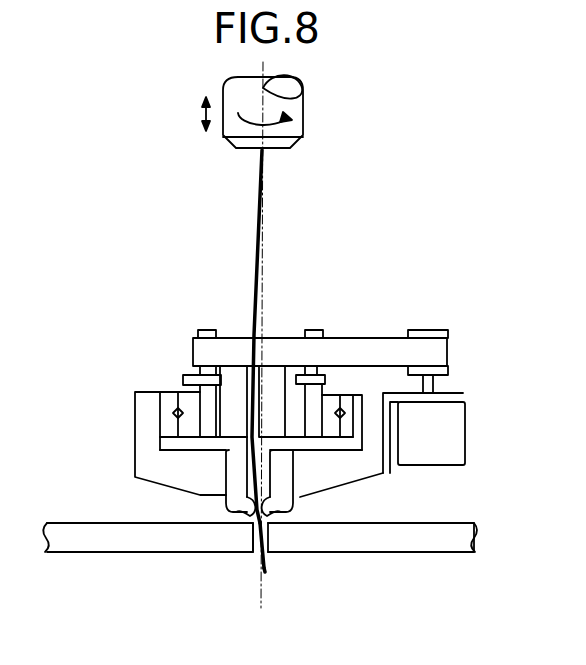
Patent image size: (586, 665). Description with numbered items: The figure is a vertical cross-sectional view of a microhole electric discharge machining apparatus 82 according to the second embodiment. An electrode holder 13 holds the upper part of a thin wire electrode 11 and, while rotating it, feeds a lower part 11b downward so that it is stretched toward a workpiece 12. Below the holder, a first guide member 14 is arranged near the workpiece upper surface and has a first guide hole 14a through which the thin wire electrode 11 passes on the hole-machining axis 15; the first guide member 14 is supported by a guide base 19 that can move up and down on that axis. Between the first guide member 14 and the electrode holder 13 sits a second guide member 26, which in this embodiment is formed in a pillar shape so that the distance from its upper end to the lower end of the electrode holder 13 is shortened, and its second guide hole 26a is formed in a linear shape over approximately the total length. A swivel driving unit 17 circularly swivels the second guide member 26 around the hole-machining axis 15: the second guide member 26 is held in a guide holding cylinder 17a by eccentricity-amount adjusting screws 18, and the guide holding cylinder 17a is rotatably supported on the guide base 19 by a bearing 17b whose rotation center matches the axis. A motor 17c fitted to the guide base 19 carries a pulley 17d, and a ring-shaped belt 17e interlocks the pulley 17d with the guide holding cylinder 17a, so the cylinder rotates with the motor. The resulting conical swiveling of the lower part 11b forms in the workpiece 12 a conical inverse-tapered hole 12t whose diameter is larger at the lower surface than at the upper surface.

The microhole electric discharge machining apparatus 82 is at (447, 151).
The electrode holder 13 is at (303, 110).
The thin wire electrode 11 is at (251, 262).
The lower part 11b is at (268, 560).
The hole-machining axis 15 is at (264, 575).
The swivel driving unit 17 is at (359, 362).
The guide holding cylinder 17a is at (313, 329).
The bearing 17b is at (392, 336).
The motor 17c is at (467, 431).
The pulley 17d is at (432, 329).
The ring-shaped belt 17e is at (351, 397).
The eccentricity-amount adjusting screws 18 is at (181, 372).
The guide base 19 is at (151, 390).
The second guide member 26 is at (272, 386).
The second guide hole 26a is at (245, 442).
The first guide member 14 is at (283, 470).
The first guide hole 14a is at (252, 519).
The workpiece 12 is at (85, 538).
The inverse-tapered hole 12t is at (253, 557).